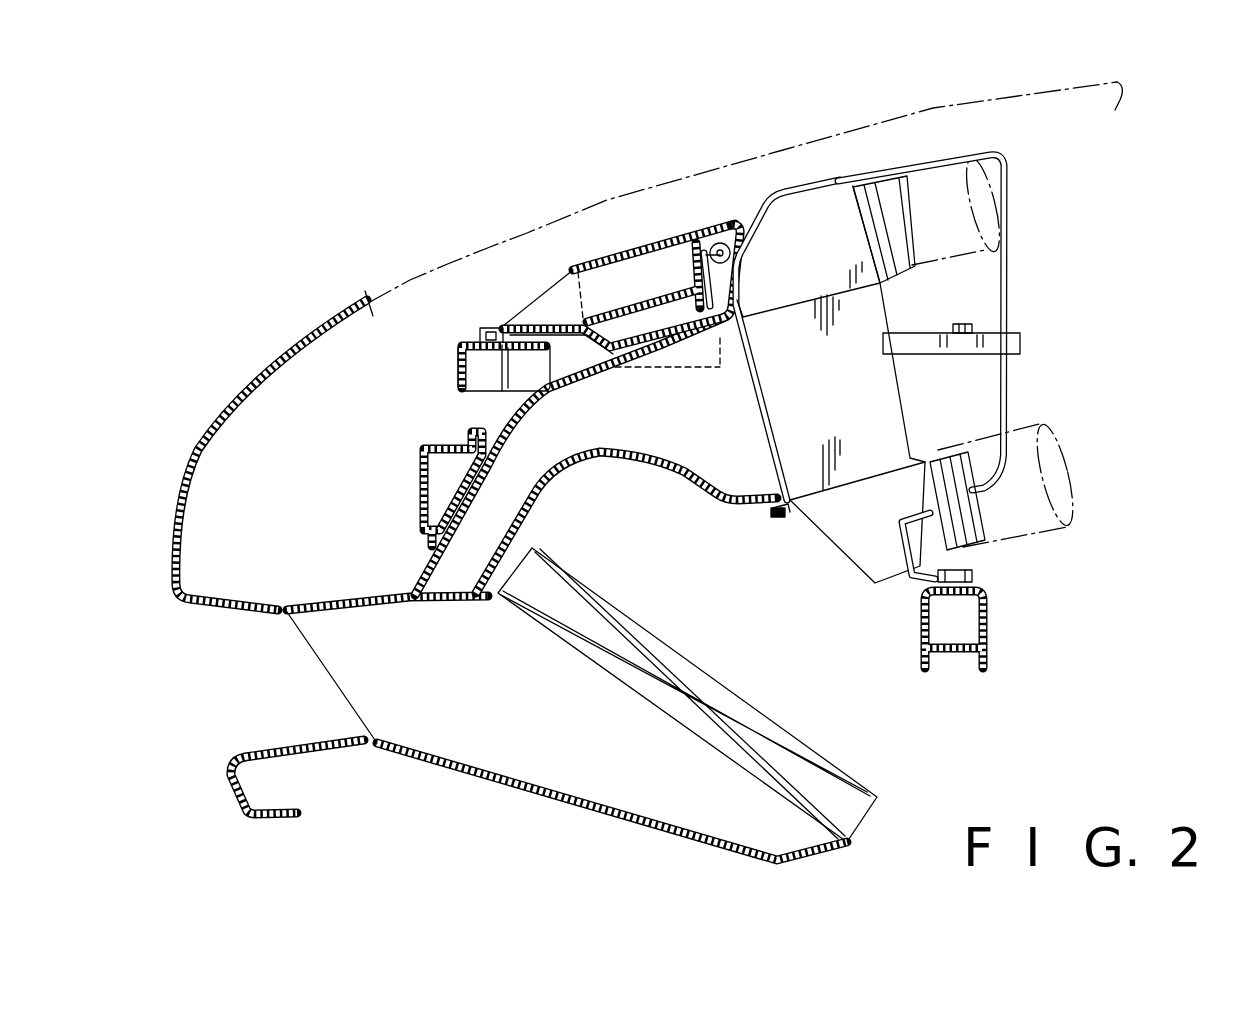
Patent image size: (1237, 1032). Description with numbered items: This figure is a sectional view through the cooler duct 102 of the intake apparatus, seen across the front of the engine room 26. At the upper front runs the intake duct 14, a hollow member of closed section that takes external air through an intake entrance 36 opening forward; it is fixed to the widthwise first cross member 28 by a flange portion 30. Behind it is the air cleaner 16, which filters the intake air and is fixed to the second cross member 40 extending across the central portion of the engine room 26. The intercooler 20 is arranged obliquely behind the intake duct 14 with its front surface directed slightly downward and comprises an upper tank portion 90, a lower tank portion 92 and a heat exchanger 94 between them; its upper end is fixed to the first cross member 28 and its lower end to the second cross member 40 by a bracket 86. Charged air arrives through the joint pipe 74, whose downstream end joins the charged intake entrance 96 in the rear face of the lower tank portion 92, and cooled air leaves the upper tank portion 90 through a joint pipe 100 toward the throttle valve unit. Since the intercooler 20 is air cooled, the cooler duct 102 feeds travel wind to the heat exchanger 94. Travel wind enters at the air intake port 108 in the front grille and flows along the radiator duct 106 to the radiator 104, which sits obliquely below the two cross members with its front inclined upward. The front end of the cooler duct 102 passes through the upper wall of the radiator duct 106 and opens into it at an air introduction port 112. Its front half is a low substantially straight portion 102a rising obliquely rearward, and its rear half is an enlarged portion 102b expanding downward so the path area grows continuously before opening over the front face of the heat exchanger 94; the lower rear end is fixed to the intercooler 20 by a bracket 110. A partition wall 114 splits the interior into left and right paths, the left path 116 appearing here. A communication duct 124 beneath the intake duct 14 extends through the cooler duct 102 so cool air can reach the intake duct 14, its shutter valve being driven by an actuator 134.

The intake duct 14 is at (620, 252).
The air cleaner 16 is at (1019, 195).
The intercooler 20 is at (838, 180).
The engine room 26 is at (348, 506).
The first cross member 28 is at (458, 345).
The flange portion 30 is at (490, 326).
The intake entrance 36 is at (556, 298).
The second cross member 40 is at (987, 617).
The joint pipe 74 is at (1005, 440).
The bracket 86 is at (907, 550).
The upper tank portion 90 is at (800, 203).
The lower tank portion 92 is at (837, 553).
The heat exchanger 94 is at (895, 400).
The charged intake entrance 96 is at (973, 513).
The joint pipe 100 is at (963, 157).
The cooler duct 102 is at (581, 456).
The substantially straight portion 102a is at (530, 533).
The enlarged portion 102b is at (770, 512).
The radiator 104 is at (688, 657).
The radiator duct 106 is at (533, 797).
The air intake port 108 is at (287, 697).
The bracket 110 is at (788, 527).
The air introduction port 112 is at (455, 589).
The partition wall 114 is at (637, 442).
The left path 116 is at (622, 427).
The communication duct 124 is at (672, 370).
The actuator 134 is at (760, 250).